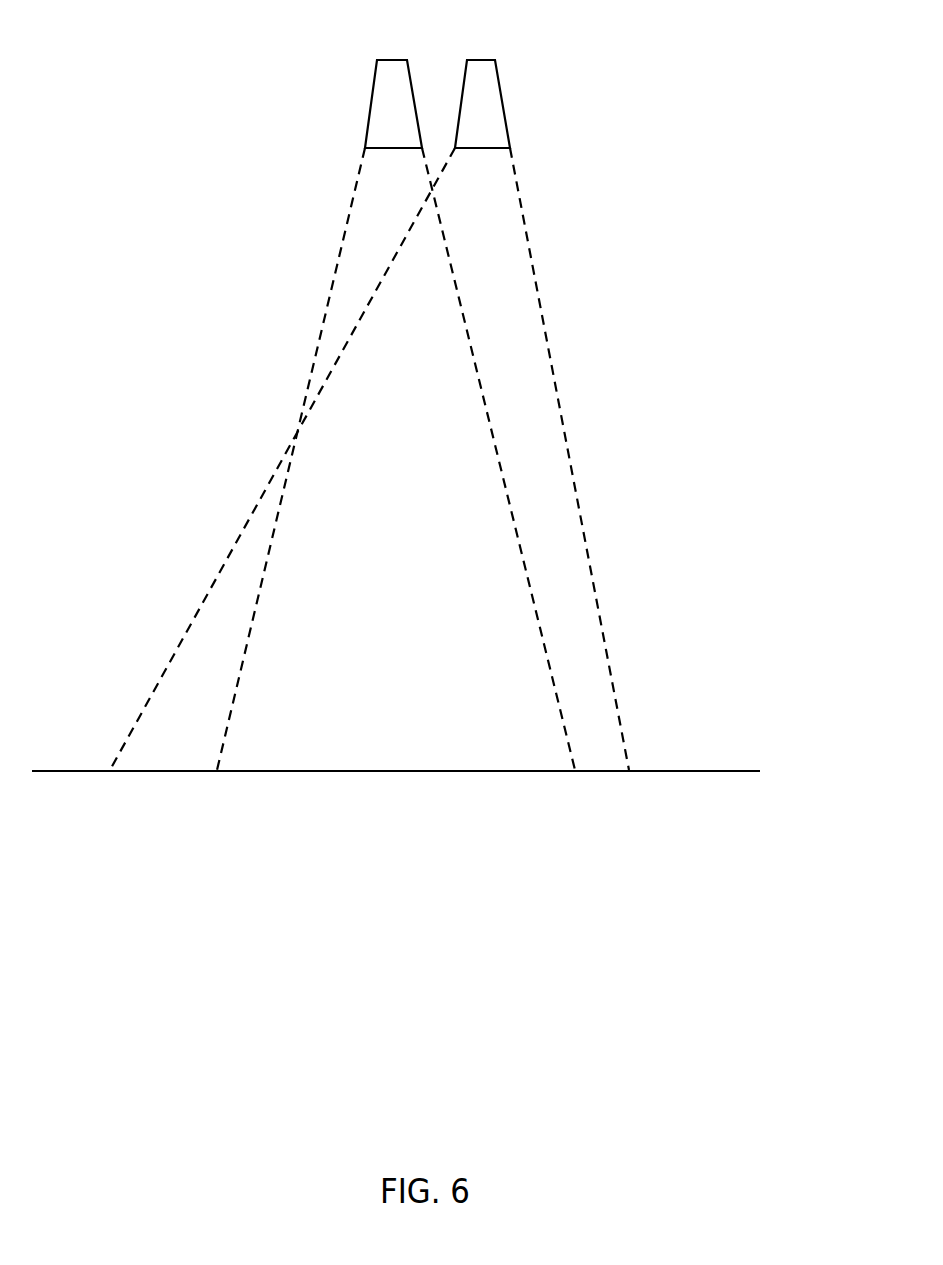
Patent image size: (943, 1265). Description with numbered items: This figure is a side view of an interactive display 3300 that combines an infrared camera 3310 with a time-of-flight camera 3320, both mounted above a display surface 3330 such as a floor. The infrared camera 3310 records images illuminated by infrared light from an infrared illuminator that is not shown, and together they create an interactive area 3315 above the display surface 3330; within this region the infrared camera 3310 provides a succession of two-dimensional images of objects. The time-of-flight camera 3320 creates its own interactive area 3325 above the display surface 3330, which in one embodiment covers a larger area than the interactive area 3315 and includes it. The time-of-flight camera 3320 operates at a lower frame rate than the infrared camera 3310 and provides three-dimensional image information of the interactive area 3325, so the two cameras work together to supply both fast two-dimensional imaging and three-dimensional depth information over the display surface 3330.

The interactive display 3300 is at (76, 26).
The infrared camera 3310 is at (372, 90).
The time-of-flight camera 3320 is at (609, 70).
The interactive area 3315 is at (318, 338).
The interactive area 3325 is at (659, 318).
The display surface 3330 is at (72, 771).